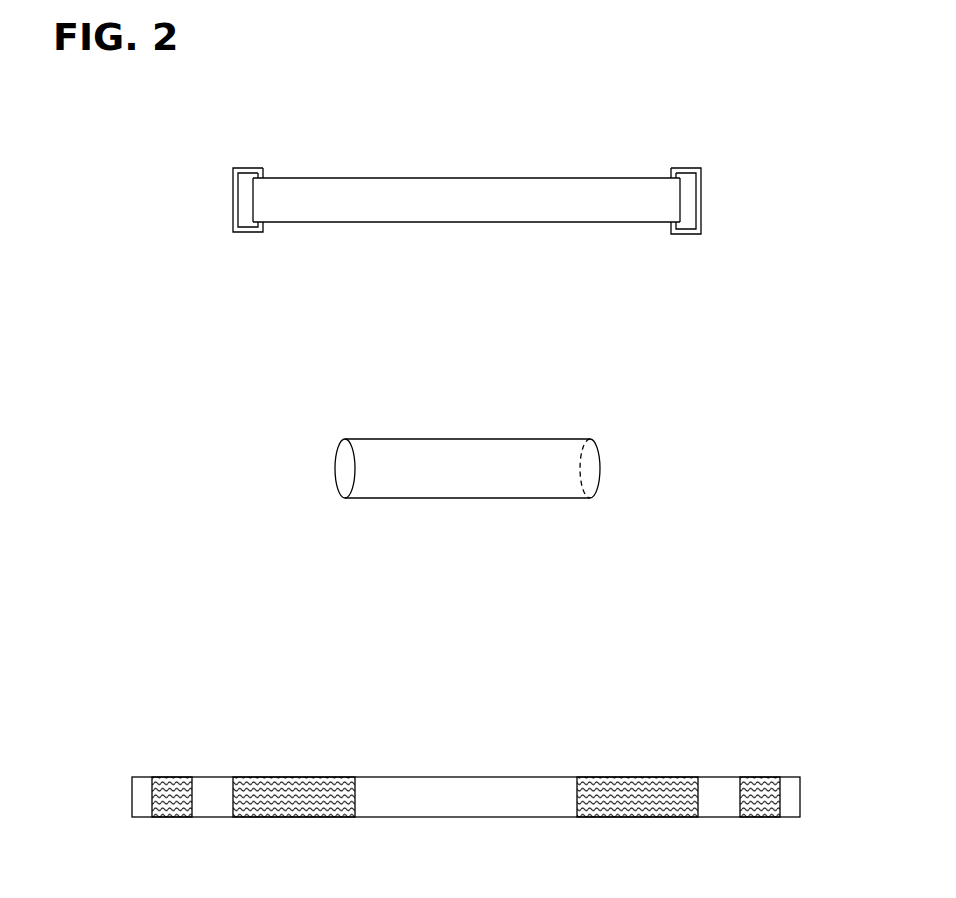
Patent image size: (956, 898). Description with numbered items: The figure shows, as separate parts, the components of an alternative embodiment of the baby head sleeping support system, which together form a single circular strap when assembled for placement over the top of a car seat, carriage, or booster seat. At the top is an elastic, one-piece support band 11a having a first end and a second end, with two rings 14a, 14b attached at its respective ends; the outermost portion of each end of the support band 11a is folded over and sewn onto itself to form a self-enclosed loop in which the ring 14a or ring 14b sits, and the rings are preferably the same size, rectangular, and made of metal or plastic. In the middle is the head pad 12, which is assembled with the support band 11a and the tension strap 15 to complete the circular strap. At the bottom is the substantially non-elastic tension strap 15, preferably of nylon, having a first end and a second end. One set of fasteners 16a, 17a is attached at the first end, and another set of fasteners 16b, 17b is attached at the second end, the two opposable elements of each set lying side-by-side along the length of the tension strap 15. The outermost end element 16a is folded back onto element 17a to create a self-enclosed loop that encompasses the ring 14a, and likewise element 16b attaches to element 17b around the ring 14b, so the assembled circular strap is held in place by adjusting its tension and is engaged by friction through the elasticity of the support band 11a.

The support band 11a is at (476, 205).
The ring 14a is at (233, 225).
The ring 14b is at (700, 170).
The head pad 12 is at (475, 462).
The tension strap 15 is at (455, 800).
The fastener element 16a is at (175, 800).
The fastener element 16b is at (763, 800).
The fastener element 17a is at (275, 800).
The fastener element 17b is at (637, 800).